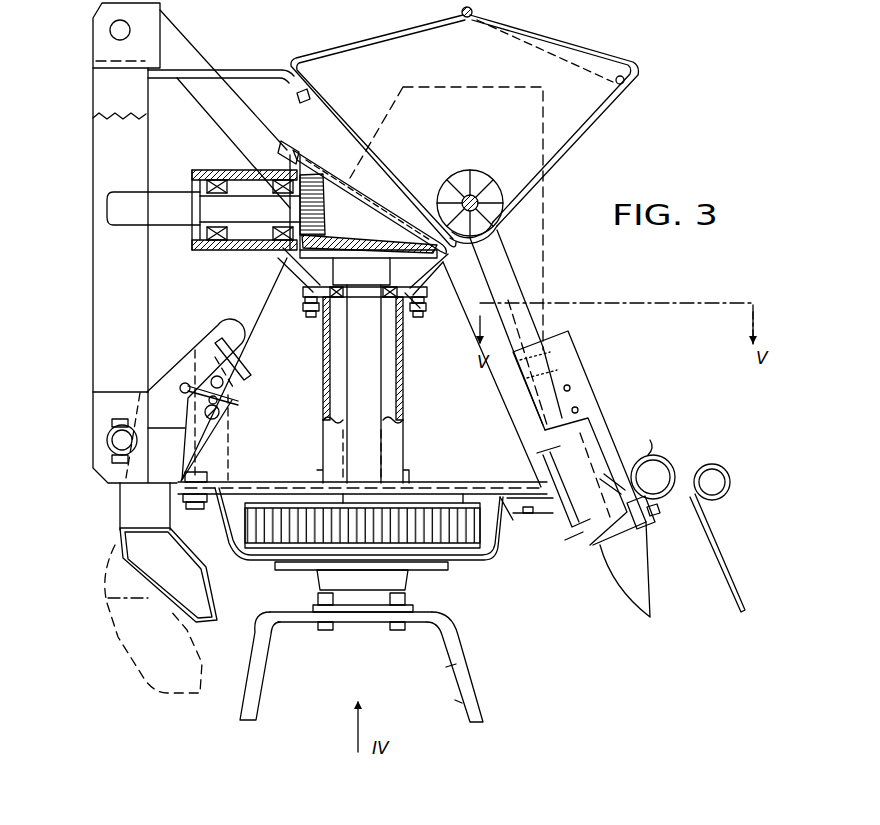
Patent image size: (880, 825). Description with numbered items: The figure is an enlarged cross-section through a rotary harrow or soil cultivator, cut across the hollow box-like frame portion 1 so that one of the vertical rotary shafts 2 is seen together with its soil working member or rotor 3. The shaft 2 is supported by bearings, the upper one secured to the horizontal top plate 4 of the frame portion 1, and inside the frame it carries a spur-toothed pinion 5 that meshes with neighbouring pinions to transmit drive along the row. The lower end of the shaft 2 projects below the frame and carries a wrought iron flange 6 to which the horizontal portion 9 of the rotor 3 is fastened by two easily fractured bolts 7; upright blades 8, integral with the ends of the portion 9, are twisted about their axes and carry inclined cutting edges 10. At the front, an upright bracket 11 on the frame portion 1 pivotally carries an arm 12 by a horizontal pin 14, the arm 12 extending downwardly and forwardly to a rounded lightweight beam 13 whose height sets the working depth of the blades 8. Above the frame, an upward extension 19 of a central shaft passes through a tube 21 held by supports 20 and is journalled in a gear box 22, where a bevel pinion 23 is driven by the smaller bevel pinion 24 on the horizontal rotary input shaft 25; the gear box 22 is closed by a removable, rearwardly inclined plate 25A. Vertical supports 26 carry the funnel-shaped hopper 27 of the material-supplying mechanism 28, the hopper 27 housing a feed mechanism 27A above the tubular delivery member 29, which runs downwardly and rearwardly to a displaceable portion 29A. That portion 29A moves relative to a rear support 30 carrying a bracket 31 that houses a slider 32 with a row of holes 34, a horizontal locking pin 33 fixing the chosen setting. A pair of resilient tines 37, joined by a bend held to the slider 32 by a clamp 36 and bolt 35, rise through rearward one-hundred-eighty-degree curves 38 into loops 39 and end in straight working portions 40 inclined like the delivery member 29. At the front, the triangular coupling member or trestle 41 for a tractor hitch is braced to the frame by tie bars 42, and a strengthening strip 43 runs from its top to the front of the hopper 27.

The frame portion 1 is at (218, 506).
The rotary shaft 2 is at (397, 478).
The soil working member 3 is at (437, 642).
The top plate 4 is at (283, 483).
The spur-toothed pinion 5 is at (442, 496).
The flange 6 is at (407, 604).
The bolt 7 is at (325, 631).
The blade 8 is at (246, 676).
The horizontal portion 9 is at (413, 622).
The cutting edge 10 is at (458, 702).
The upright bracket 11 is at (235, 431).
The arm 12 is at (183, 362).
The beam 13 is at (118, 565).
The pin 14 is at (232, 326).
The upward extension 19 is at (338, 345).
The support 20 is at (480, 418).
The tube 21 is at (400, 390).
The gear box 22 is at (436, 272).
The bevel pinion 23 is at (360, 236).
The smaller bevel pinion 24 is at (322, 166).
The rotary input shaft 25 is at (160, 194).
The removable plate 25A is at (388, 176).
The support 26 is at (535, 211).
The hopper 27 is at (600, 120).
The feed mechanism 27A is at (490, 183).
The mechanism 28 is at (355, 44).
The tubular delivery member 29 is at (522, 283).
The displaceable portion 29A is at (618, 583).
The support 30 is at (566, 527).
The bracket 31 is at (585, 546).
The slider 32 is at (565, 353).
The locking pin 33 is at (615, 462).
The hole 34 is at (579, 410).
The bolt 35 is at (643, 505).
The clamp 36 is at (652, 530).
The tine 37 is at (670, 458).
The curve 38 is at (650, 440).
The loop 39 is at (716, 464).
The straight working portion 40 is at (722, 545).
The coupling member 41 is at (100, 185).
The tie bar 42 is at (212, 105).
The strengthening strip 43 is at (232, 72).